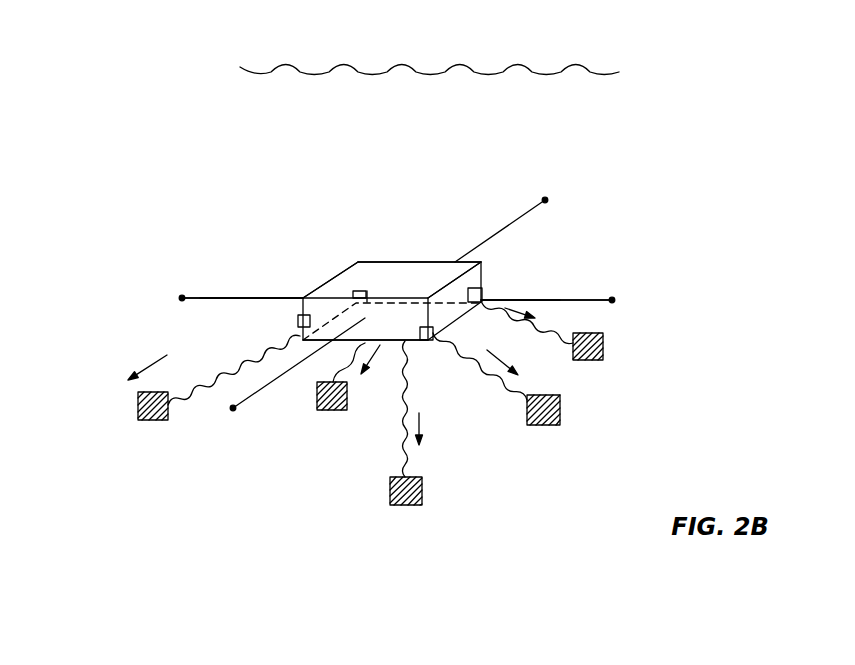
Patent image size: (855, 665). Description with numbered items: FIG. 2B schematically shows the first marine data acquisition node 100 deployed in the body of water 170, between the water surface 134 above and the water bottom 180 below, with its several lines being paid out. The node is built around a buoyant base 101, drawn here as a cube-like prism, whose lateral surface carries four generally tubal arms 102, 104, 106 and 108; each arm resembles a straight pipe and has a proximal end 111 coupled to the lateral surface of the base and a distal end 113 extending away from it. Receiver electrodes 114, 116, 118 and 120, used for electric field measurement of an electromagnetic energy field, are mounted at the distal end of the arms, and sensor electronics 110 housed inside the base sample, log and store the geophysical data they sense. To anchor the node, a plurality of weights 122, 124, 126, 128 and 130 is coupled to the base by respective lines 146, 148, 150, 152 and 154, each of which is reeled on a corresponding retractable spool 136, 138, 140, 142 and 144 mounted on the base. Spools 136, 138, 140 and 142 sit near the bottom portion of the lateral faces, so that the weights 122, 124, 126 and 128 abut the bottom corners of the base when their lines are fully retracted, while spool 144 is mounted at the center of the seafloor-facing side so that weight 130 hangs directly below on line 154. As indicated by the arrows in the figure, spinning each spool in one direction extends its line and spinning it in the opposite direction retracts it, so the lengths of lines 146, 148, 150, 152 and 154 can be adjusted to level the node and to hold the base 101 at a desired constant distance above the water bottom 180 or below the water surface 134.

The first marine data acquisition node 100 is at (313, 176).
The base 101 is at (423, 273).
The arm 102 is at (498, 230).
The arm 104 is at (558, 300).
The arm 106 is at (300, 342).
The arm 108 is at (232, 298).
The sensor electronics 110 is at (390, 277).
The proximal end 111 is at (365, 322).
The distal end 113 is at (202, 298).
The receiver electrode 114 is at (546, 199).
The receiver electrode 116 is at (612, 300).
The receiver electrode 118 is at (232, 409).
The receiver electrode 120 is at (182, 298).
The weight 122 is at (560, 410).
The weight 124 is at (603, 350).
The weight 126 is at (138, 407).
The weight 128 is at (328, 410).
The weight 130 is at (422, 488).
The water surface 134 is at (411, 39).
The spool 136 is at (430, 341).
The spool 138 is at (483, 294).
The spool 140 is at (300, 320).
The spool 142 is at (360, 291).
The spool 144 is at (403, 342).
The line 146 is at (512, 394).
The line 148 is at (548, 333).
The line 150 is at (244, 357).
The line 152 is at (335, 364).
The line 154 is at (405, 452).
The body of water 170 is at (586, 139).
The water bottom 180 is at (412, 577).